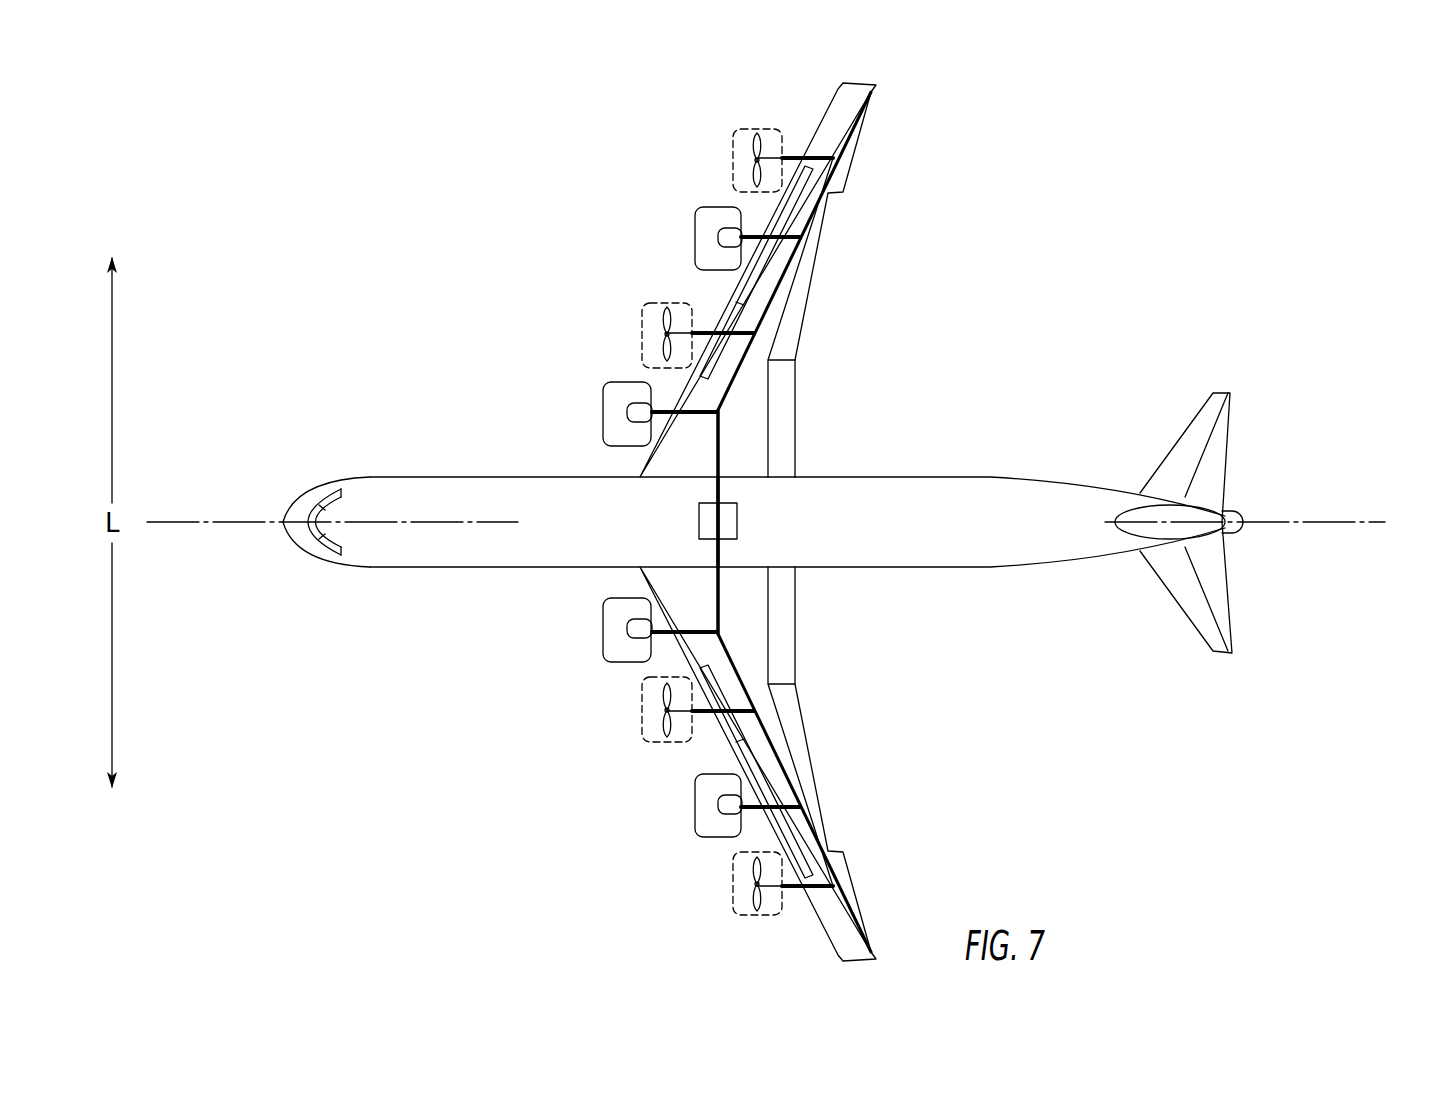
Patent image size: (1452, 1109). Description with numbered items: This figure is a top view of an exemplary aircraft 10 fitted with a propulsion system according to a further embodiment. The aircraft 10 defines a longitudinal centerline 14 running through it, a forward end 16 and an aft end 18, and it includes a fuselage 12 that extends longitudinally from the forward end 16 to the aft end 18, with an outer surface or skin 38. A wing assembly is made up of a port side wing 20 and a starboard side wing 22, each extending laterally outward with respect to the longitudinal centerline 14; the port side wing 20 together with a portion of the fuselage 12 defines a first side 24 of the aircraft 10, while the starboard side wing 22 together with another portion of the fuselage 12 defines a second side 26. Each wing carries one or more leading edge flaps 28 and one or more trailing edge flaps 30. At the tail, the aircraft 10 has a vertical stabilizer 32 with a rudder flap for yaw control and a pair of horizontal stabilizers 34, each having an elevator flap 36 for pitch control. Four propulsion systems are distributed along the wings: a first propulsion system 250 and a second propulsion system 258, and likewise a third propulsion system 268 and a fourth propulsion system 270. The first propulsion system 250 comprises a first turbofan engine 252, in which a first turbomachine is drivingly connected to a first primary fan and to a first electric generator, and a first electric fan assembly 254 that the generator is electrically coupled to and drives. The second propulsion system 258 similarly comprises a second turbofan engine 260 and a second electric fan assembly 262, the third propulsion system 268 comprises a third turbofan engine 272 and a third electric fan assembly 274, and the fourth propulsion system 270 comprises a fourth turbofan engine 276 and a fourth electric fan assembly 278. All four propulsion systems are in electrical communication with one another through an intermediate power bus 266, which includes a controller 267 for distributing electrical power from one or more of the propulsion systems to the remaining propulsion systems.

The aircraft 10 is at (1005, 212).
The fuselage 12 is at (362, 550).
The longitudinal centerline 14 is at (1343, 522).
The forward end 16 is at (276, 552).
The aft end 18 is at (1174, 640).
The port side wing 20 is at (848, 920).
The starboard side wing 22 is at (845, 140).
The first side 24 is at (575, 823).
The second side 26 is at (568, 285).
The leading edge flap 28 is at (748, 763).
The trailing edge flap 30 is at (827, 797).
The vertical stabilizer 32 is at (1237, 533).
The horizontal stabilizer 34 is at (1195, 422).
The elevator flap 36 is at (1220, 438).
The outer surface or skin 38 is at (962, 530).
The first propulsion system 250 is at (580, 698).
The first turbofan engine 252 is at (603, 630).
The first electric fan assembly 254 is at (645, 712).
The second propulsion system 258 is at (578, 360).
The second turbofan engine 260 is at (603, 417).
The second electric fan assembly 262 is at (642, 340).
The intermediate power bus 266 is at (742, 553).
The controller 267 is at (698, 517).
The third propulsion system 268 is at (680, 890).
The fourth propulsion system 270 is at (672, 180).
The third turbofan engine 272 is at (693, 813).
The third electric fan assembly 274 is at (733, 898).
The fourth turbofan engine 276 is at (692, 252).
The fourth electric fan assembly 278 is at (733, 153).